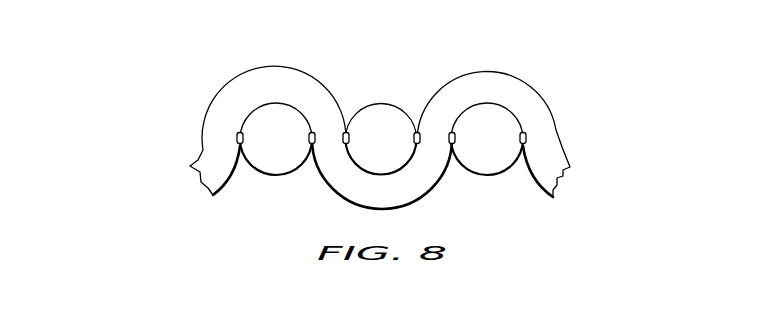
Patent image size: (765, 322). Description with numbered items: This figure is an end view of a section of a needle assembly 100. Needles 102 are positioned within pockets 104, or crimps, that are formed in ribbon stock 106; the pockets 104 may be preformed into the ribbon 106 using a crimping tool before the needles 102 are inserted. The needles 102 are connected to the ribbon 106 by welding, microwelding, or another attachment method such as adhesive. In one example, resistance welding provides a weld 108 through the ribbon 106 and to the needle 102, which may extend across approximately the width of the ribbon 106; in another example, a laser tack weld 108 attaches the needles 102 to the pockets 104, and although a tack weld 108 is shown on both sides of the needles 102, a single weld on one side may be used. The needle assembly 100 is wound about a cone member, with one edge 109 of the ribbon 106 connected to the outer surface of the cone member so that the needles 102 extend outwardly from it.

The needle assembly 100 is at (163, 58).
The needle 102 is at (381, 137).
The pocket 104 is at (278, 104).
The ribbon stock 106 is at (403, 113).
The weld 108 is at (344, 134).
The edge of the ribbon 109 is at (488, 87).